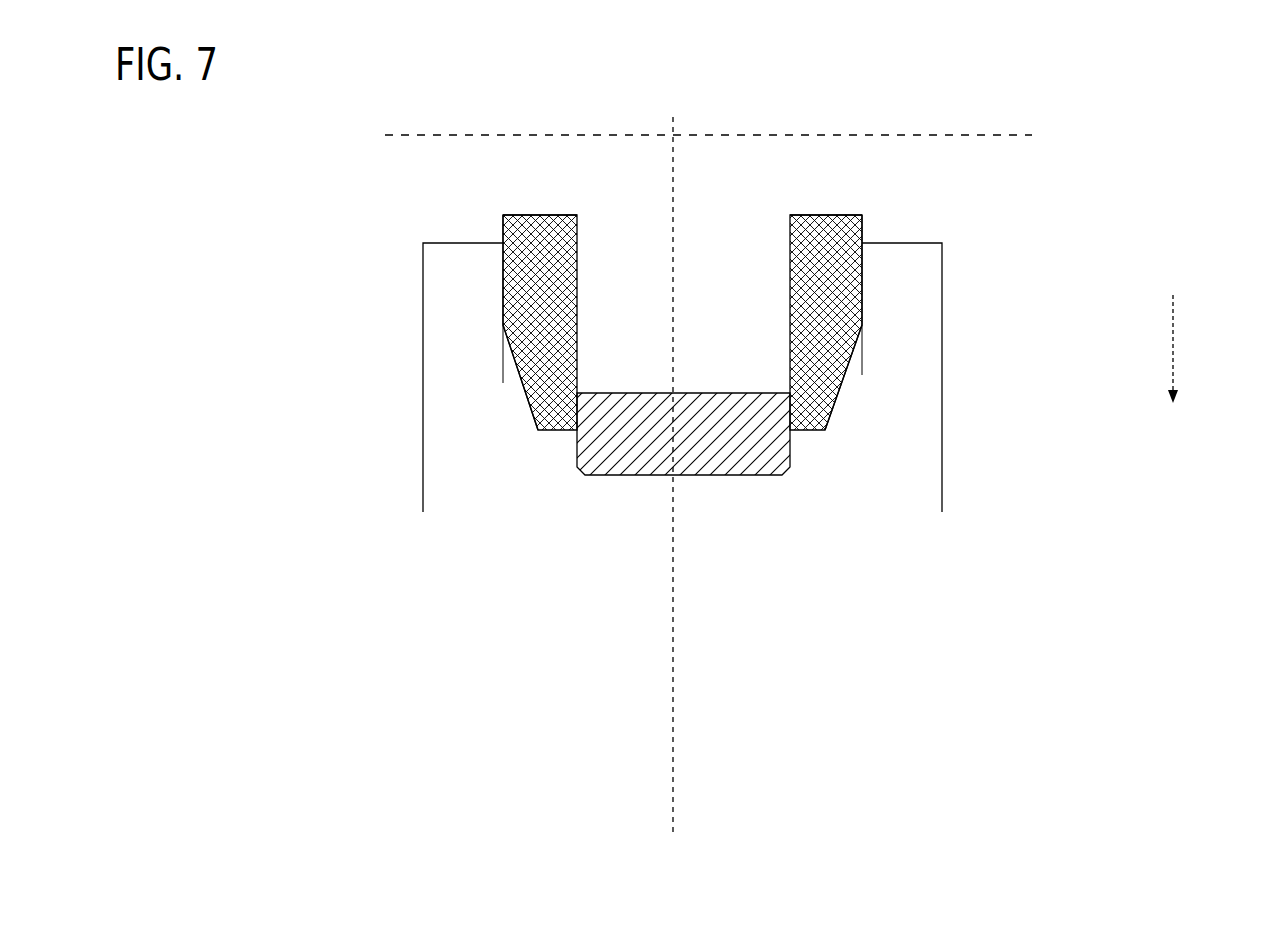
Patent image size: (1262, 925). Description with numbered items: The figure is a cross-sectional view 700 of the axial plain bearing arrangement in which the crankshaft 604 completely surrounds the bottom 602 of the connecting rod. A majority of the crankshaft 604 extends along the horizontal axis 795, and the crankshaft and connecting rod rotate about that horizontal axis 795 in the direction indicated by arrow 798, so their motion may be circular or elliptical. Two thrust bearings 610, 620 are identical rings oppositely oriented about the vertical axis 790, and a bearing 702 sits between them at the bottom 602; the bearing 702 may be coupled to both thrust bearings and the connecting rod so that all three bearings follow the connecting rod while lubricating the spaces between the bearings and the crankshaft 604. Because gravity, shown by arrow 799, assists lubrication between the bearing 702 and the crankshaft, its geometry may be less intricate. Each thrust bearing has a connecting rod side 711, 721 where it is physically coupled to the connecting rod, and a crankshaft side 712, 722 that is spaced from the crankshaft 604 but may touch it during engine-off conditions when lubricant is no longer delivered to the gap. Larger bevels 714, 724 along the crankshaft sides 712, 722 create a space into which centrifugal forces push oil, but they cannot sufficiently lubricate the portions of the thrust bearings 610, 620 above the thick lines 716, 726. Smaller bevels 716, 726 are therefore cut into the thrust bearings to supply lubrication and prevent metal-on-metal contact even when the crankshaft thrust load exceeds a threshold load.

The cross-sectional view 700 is at (1072, 92).
The bottom of the connecting rod 602 is at (714, 120).
The crankshaft 604 is at (423, 323).
The thrust bearing 610 is at (600, 214).
The thrust bearing 620 is at (748, 214).
The bearing 702 is at (648, 393).
The connecting rod side 711 is at (578, 270).
The crankshaft side 712 is at (503, 232).
The larger bevel 714 is at (520, 388).
The smaller bevel 716 is at (500, 328).
The connecting rod side 721 is at (790, 270).
The crankshaft side 722 is at (862, 232).
The larger bevel 724 is at (838, 390).
The smaller bevel 726 is at (888, 318).
The vertical axis 790 is at (674, 778).
The horizontal axis 795 is at (863, 135).
The arrow indicating direction of motion 798 is at (413, 150).
The arrow indicating direction of gravity 799 is at (1173, 333).